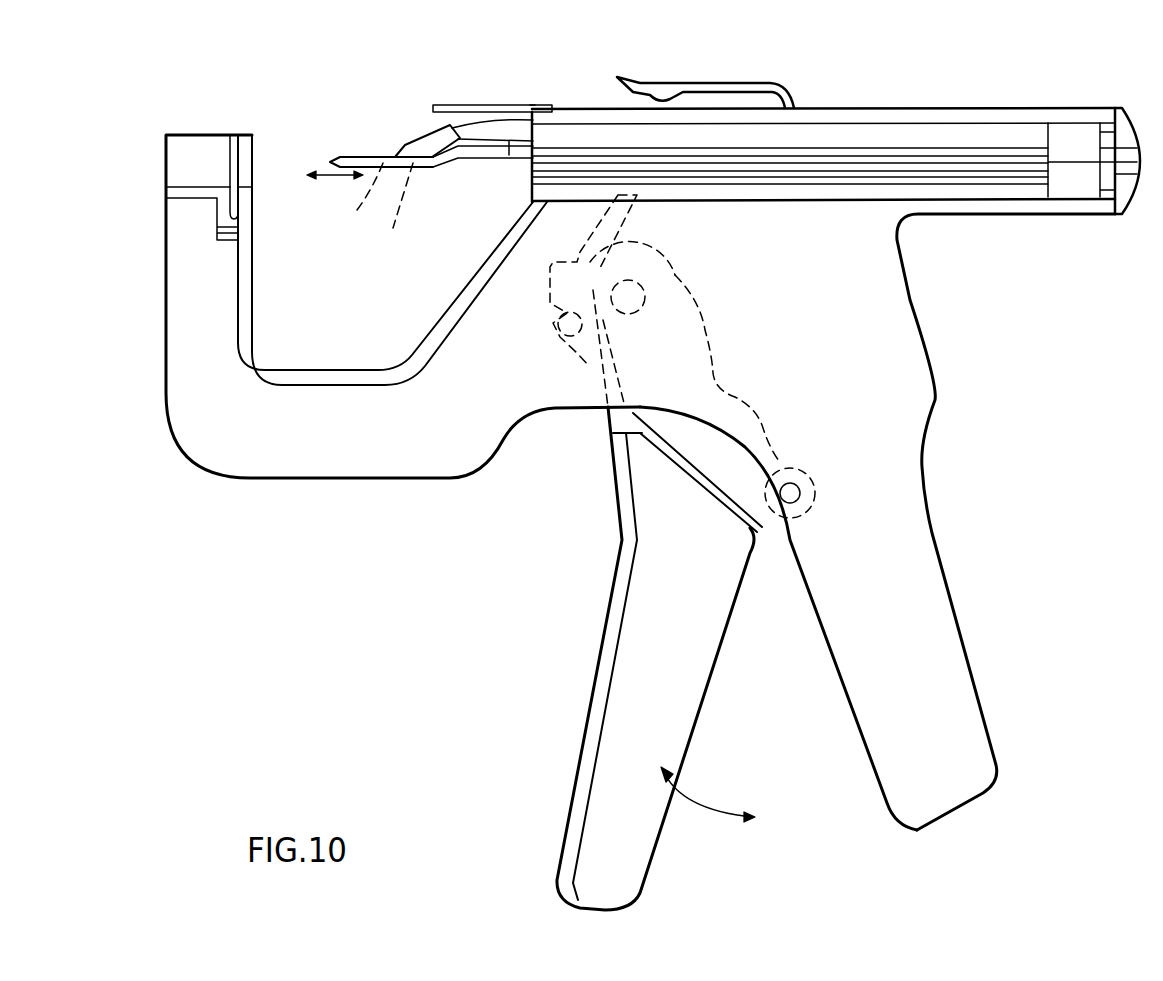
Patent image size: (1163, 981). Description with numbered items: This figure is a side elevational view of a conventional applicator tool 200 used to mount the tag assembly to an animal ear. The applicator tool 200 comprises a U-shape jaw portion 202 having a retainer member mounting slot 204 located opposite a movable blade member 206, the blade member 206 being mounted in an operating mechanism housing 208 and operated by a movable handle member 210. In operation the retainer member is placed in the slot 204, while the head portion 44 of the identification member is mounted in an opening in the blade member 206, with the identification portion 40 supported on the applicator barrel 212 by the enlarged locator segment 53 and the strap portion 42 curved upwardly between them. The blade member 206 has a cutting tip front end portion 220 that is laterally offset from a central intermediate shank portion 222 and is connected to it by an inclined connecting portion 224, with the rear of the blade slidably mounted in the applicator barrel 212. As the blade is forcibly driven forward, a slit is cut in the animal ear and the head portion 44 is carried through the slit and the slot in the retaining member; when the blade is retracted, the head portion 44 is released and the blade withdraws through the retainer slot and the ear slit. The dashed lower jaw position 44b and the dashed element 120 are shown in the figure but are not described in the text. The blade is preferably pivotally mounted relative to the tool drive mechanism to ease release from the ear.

The applicator tool 200 is at (940, 332).
The U-shape jaw portion 202 is at (385, 460).
The retainer member mounting slot 204 is at (234, 135).
The movable blade member 206 is at (445, 178).
The operating mechanism housing 208 is at (830, 267).
The movable handle member 210 is at (640, 577).
The applicator barrel 212 is at (603, 137).
The cutting tip front end portion 220 is at (332, 157).
The central intermediate shank portion 222 is at (450, 158).
The inclined connecting portion 224 is at (453, 162).
The identification portion 40 is at (447, 106).
The strap portion 42 is at (545, 138).
The head portion 44 is at (418, 137).
The lower jaw 44b is at (396, 213).
The enlarged locator segment 53 is at (523, 106).
The insert in open position 120 is at (357, 204).